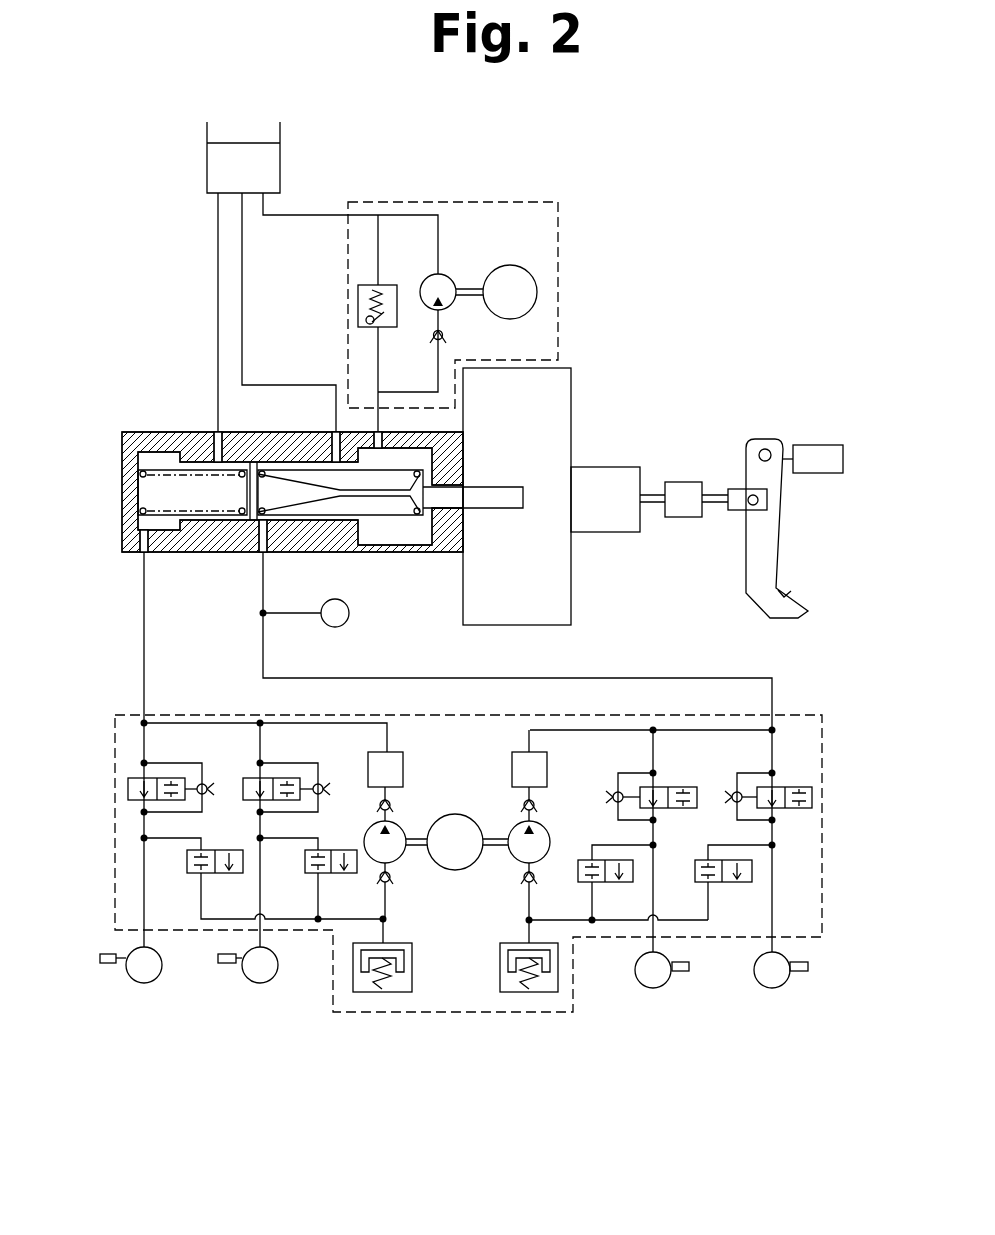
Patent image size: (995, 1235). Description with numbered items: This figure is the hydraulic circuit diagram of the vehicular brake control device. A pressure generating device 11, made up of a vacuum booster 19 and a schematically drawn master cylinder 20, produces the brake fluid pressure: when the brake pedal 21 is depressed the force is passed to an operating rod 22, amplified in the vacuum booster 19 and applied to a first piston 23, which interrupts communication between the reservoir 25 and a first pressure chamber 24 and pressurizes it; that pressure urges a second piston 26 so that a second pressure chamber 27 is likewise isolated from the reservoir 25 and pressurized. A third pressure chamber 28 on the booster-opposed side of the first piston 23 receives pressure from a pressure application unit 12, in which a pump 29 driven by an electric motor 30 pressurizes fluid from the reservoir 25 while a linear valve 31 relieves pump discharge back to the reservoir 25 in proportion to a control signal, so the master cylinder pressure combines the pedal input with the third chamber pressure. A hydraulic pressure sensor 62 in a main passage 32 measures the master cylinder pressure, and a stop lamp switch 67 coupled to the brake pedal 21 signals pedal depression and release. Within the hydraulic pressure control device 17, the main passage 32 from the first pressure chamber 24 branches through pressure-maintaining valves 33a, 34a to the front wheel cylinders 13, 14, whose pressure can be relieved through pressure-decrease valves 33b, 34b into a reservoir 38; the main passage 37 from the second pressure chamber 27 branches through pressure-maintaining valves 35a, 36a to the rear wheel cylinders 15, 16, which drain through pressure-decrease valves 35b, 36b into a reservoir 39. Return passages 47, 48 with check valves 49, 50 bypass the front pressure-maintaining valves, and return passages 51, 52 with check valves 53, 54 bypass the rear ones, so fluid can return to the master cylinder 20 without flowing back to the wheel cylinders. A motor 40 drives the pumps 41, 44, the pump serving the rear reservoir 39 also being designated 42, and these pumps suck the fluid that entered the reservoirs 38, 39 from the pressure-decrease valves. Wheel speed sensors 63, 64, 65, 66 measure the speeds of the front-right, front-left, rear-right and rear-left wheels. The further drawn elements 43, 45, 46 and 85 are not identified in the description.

The pressure generating device 11 is at (587, 352).
The pressure application unit 12 is at (498, 200).
The wheel cylinder 13 is at (768, 988).
The wheel cylinder 14 is at (650, 988).
The wheel cylinder 15 is at (144, 983).
The wheel cylinder 16 is at (264, 983).
The hydraulic pressure control device 17 is at (667, 709).
The vacuum booster 19 is at (572, 385).
The master cylinder 20 is at (178, 421).
The brake pedal 21 is at (783, 553).
The operating rod 22 is at (654, 505).
The first piston 23 is at (426, 500).
The first pressure chamber 24 is at (286, 492).
The reservoir 25 is at (282, 160).
The second piston 26 is at (212, 505).
The second pressure chamber 27 is at (160, 495).
The third pressure chamber 28 is at (376, 536).
The pump 29 is at (450, 275).
The electric motor 30 is at (537, 280).
The linear valve 31 is at (358, 302).
The main passage 32 is at (290, 633).
The pressure-maintaining valve 33a is at (793, 810).
The pressure-decrease valve 33b is at (718, 883).
The pressure-maintaining valve 34a is at (690, 792).
The pressure-decrease valve 34b is at (580, 878).
The pressure-maintaining valve 35a is at (128, 780).
The pressure-decrease valve 35b is at (187, 862).
The pressure-maintaining valve 36a is at (243, 786).
The pressure-decrease valve 36b is at (352, 870).
The main passage 37 is at (144, 637).
The reservoir 38 is at (546, 993).
The reservoir 39 is at (366, 993).
The motor 40 is at (458, 870).
The pump 41 is at (512, 830).
The pump 42 is at (530, 740).
The damper chamber 43 is at (512, 775).
The pump 44 is at (368, 830).
The fluid passage 45 is at (387, 732).
The damper chamber 46 is at (403, 772).
The return passage 47 is at (760, 786).
The return passage 48 is at (635, 777).
The check valve 49 is at (735, 792).
The check valve 50 is at (608, 800).
The return passage 51 is at (178, 770).
The return passage 52 is at (286, 770).
The check valve 53 is at (212, 797).
The check valve 54 is at (322, 784).
The hydraulic pressure sensor 62 is at (349, 613).
The wheel speed sensor 63 is at (798, 972).
The wheel speed sensor 64 is at (680, 972).
The wheel speed sensor 65 is at (105, 963).
The wheel speed sensor 66 is at (228, 965).
The stop lamp switch 67 is at (815, 445).
The stroke sensor 85 is at (688, 482).